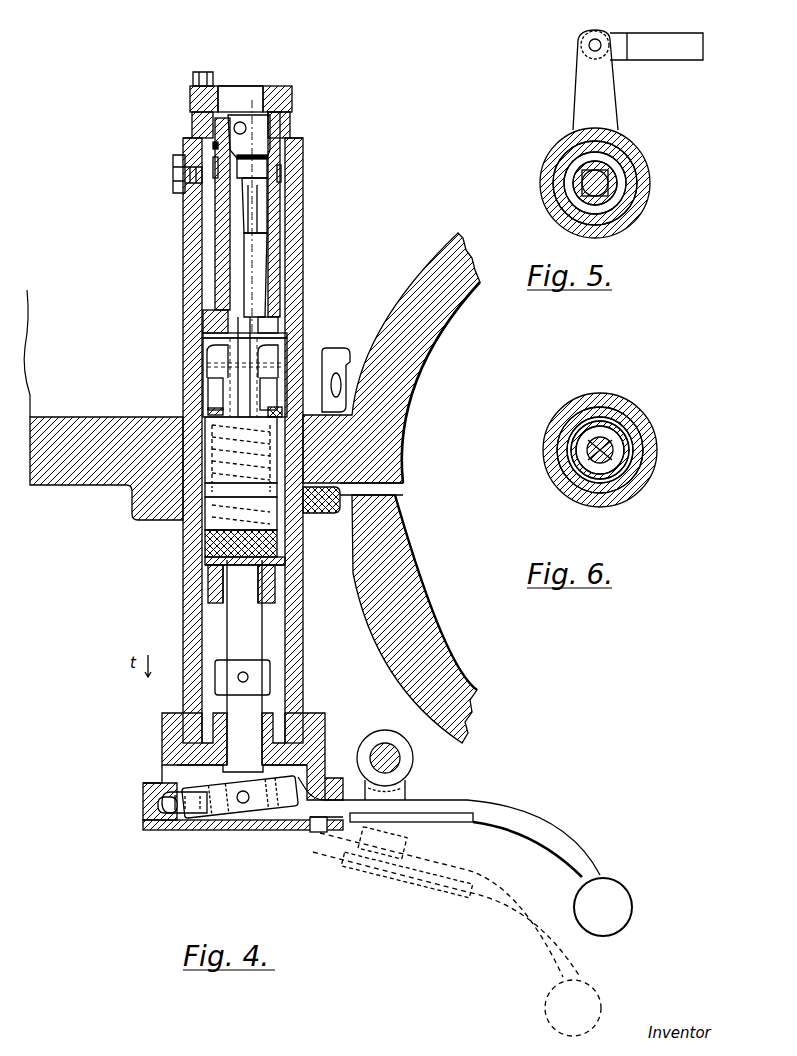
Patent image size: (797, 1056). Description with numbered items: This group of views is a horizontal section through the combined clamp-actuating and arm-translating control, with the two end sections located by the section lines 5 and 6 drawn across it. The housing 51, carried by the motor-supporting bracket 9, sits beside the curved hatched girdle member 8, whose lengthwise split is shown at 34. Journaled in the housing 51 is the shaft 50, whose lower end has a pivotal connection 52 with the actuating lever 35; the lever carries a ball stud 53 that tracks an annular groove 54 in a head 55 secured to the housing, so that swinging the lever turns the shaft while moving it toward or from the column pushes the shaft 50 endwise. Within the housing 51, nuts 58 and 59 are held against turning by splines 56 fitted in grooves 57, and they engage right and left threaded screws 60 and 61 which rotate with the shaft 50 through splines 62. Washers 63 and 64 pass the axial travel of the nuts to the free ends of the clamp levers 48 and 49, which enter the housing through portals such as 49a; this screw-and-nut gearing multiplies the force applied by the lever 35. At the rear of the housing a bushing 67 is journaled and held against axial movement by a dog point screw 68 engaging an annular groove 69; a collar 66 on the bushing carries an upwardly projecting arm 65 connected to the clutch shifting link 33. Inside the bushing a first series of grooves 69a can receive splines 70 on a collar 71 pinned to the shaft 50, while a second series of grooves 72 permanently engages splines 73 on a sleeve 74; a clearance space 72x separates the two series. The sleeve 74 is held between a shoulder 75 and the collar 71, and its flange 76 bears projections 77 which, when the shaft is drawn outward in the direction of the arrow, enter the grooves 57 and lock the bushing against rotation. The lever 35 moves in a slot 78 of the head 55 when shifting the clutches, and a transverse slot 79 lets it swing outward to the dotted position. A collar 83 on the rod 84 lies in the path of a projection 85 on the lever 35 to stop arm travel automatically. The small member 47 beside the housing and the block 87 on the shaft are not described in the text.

In FIG. 4, the section line 5— 5 is at (336, 145).
In FIG. 4, the sleeve 6 is at (330, 534).
In FIG. 4, the drum 8 is at (430, 354).
In FIG. 4, the motor-supporting bracket 9 is at (98, 417).
In FIG. 5, the clutch shifting link 33 is at (656, 46).
In FIG. 4, the split in girdle 34 is at (378, 490).
In FIG. 4, the actuating lever 35 is at (531, 836).
In FIG. 4, the latch 47 is at (336, 380).
In FIG. 4, the lever 48 is at (258, 626).
In FIG. 4, the lever 49 is at (210, 390).
In FIG. 4, the portal 49a is at (203, 357).
In FIG. 4, the shaft 50 is at (244, 662).
In FIG. 5, the shaft 50 is at (582, 185).
In FIG. 6, the shaft 50 is at (608, 444).
In FIG. 4, the housing 51 is at (183, 621).
In FIG. 5, the housing 51 is at (548, 218).
In FIG. 6, the housing 51 is at (655, 478).
In FIG. 4, the pivotal connection 52 is at (243, 803).
In FIG. 4, the ball stud 53 is at (148, 827).
In FIG. 4, the annular groove 54 is at (160, 799).
In FIG. 4, the head 55 is at (162, 765).
In FIG. 4, the splines 56 is at (205, 536).
In FIG. 6, the splines 56 is at (625, 418).
In FIG. 4, the grooves 57 is at (215, 365).
In FIG. 6, the grooves 57 is at (628, 480).
In FIG. 4, the nut 58 is at (205, 552).
In FIG. 6, the nut 58 is at (622, 458).
In FIG. 4, the nut 59 is at (200, 432).
In FIG. 4, the screw 60 is at (240, 588).
In FIG. 6, the screw 60 is at (576, 452).
In FIG. 4, the screw 61 is at (241, 492).
In FIG. 4, the splines 62 is at (241, 584).
In FIG. 6, the splines 62 is at (575, 470).
In FIG. 4, the washer 63 is at (285, 562).
In FIG. 4, the washer 64 is at (276, 414).
In FIG. 5, the arm 65 is at (615, 110).
In FIG. 4, the collar 66 is at (292, 97).
In FIG. 4, the bushing 67 is at (290, 128).
In FIG. 5, the bushing 67 is at (612, 225).
In FIG. 4, the dog point screw 68 is at (176, 183).
In FIG. 4, the annular groove 69 is at (281, 176).
In FIG. 4, the first series of grooves 69a is at (213, 145).
In FIG. 5, the first series of grooves 69a is at (612, 177).
In FIG. 4, the splines 70 is at (249, 146).
In FIG. 5, the splines 70 is at (605, 198).
In FIG. 4, the collar 71 is at (256, 124).
In FIG. 5, the collar 71 is at (576, 170).
In FIG. 4, the second series of grooves 72 is at (215, 222).
In FIG. 4, the clearance space 72x is at (268, 158).
In FIG. 4, the splines 73 is at (260, 216).
In FIG. 4, the sleeve 74 is at (260, 247).
In FIG. 4, the shoulder 75 is at (245, 338).
In FIG. 4, the flange 76 is at (272, 323).
In FIG. 4, the projections 77 is at (287, 334).
In FIG. 4, the slot 78 is at (338, 808).
In FIG. 4, the transverse slot 79 is at (318, 826).
In FIG. 4, the collar 83 is at (383, 732).
In FIG. 4, the rod 84 is at (400, 762).
In FIG. 4, the projection 85 is at (405, 789).
In FIG. 4, the block 87 is at (255, 686).